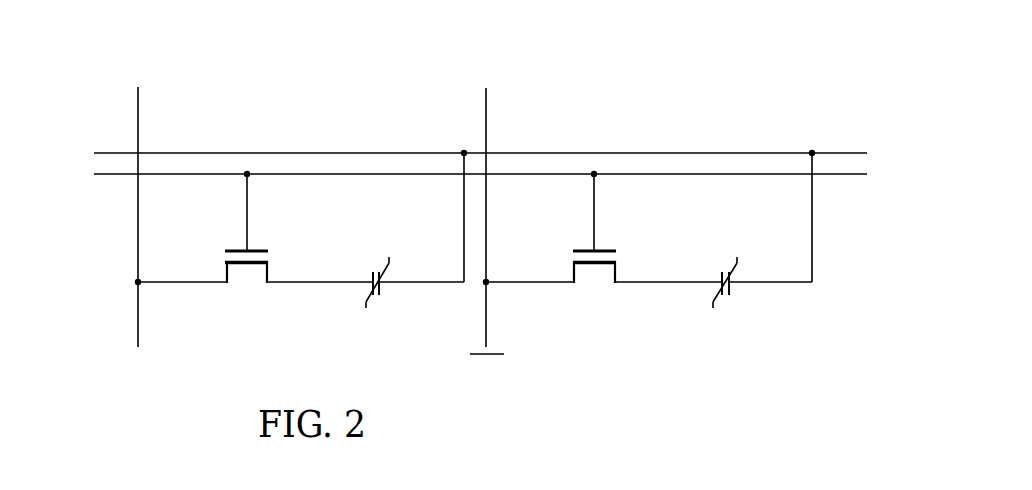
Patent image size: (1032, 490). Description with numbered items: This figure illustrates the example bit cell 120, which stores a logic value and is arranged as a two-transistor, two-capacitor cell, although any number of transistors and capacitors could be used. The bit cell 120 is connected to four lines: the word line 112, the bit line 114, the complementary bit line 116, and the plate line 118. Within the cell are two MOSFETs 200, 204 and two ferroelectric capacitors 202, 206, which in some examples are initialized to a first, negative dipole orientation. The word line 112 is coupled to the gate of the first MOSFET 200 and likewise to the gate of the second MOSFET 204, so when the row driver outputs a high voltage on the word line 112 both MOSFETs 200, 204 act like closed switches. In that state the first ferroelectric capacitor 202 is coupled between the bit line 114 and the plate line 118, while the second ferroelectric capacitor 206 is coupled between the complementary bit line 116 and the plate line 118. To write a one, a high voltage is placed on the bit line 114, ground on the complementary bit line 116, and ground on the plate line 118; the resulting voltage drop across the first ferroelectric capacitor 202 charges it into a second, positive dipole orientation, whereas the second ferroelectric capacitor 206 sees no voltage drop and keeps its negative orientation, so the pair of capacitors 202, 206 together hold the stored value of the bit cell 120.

The word line 112 is at (70, 152).
The bit line 114 is at (140, 382).
The complementary bit line 116 is at (487, 383).
The plate line 118 is at (882, 135).
The bit cell 120 is at (360, 70).
The MOSFET 200 is at (238, 248).
The ferroelectric capacitor 202 is at (376, 297).
The MOSFET 204 is at (603, 247).
The ferroelectric capacitor 206 is at (725, 297).